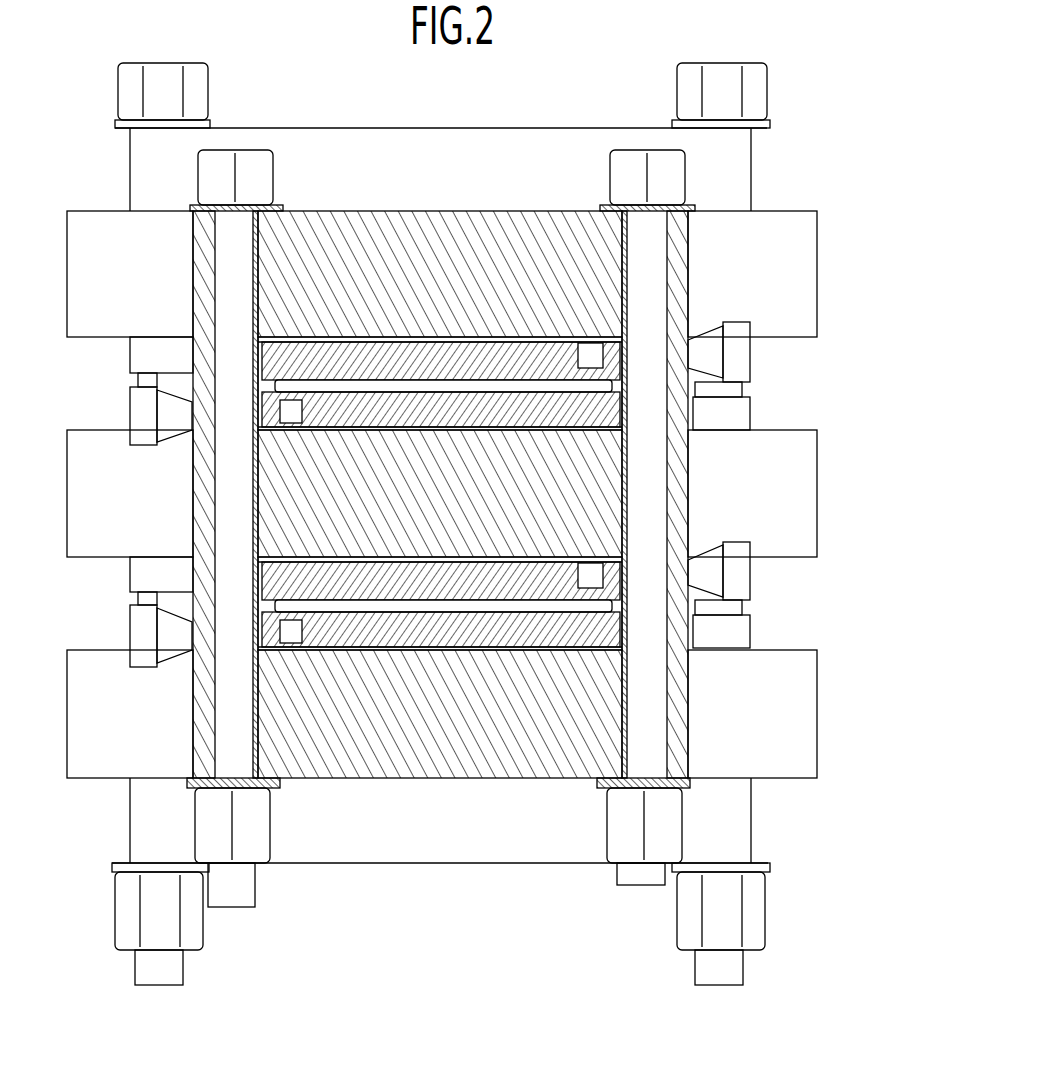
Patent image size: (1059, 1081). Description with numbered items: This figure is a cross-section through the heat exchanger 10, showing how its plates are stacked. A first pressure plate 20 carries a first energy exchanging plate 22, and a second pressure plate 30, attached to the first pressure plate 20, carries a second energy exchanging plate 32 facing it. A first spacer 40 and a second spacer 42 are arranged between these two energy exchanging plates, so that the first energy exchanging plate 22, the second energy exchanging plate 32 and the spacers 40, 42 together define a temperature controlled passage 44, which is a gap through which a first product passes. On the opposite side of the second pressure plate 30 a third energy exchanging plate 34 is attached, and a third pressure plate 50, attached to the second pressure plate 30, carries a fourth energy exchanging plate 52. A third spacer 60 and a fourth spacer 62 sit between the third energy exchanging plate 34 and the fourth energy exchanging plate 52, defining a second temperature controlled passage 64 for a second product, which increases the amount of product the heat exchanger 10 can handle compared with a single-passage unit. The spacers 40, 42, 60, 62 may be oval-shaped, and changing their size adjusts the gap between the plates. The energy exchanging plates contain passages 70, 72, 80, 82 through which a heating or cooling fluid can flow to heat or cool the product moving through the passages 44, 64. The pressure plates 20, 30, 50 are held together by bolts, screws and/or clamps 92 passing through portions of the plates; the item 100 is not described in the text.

The heat exchanger 10 is at (618, 88).
The frame 100 is at (316, 175).
The first pressure plate 20 is at (355, 240).
The first energy exchanging plate 22 is at (470, 335).
The second pressure plate 30 is at (587, 500).
The second energy exchanging plate 32 is at (540, 392).
The third energy exchanging plate 34 is at (370, 600).
The first spacer 40 is at (283, 335).
The second spacer 42 is at (623, 378).
The temperature controlled passage 44 is at (410, 380).
The third pressure plate 50 is at (510, 753).
The fourth energy exchanging plate 52 is at (453, 623).
The third spacer 60 is at (287, 650).
The fourth spacer 62 is at (612, 655).
The second temperature controlled passage 64 is at (402, 600).
The passage 70 is at (745, 360).
The passage 72 is at (126, 413).
The passage 80 is at (745, 576).
The passage 82 is at (126, 632).
The bolts, screws and/or clamps 92 is at (672, 173).